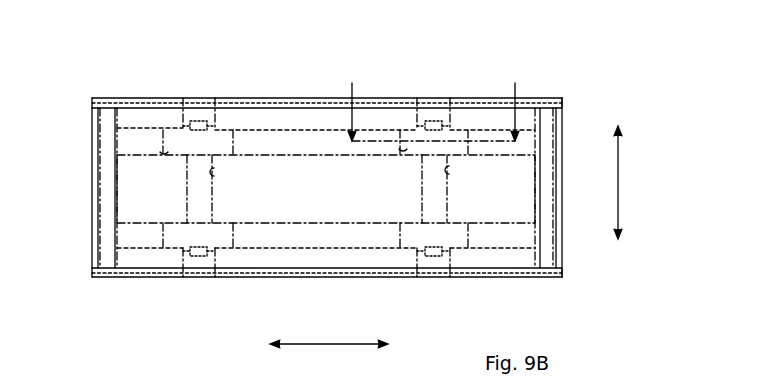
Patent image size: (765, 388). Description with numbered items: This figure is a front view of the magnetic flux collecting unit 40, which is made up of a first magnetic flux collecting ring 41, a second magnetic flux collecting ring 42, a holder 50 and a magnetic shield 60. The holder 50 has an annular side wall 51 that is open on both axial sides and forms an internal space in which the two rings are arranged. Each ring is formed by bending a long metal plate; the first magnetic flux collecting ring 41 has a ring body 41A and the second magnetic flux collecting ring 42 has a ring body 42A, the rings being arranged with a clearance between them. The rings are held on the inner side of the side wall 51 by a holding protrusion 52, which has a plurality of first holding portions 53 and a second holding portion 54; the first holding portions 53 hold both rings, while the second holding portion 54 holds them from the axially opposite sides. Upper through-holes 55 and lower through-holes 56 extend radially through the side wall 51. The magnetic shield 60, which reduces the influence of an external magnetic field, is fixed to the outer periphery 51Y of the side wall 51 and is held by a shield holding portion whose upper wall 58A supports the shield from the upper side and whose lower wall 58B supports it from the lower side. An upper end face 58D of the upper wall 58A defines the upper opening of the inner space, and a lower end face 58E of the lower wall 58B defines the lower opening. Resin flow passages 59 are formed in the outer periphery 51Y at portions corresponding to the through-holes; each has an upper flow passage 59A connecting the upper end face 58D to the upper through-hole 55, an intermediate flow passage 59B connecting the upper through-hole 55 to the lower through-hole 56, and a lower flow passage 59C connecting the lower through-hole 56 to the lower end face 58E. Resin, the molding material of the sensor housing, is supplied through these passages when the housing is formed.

The magnetic flux collecting unit 40 is at (336, 179).
The first magnetic flux collecting ring 41 is at (491, 123).
The ring body 41A is at (272, 114).
The second magnetic flux collecting ring 42 is at (492, 258).
The ring body 42A is at (265, 262).
The holder 50 is at (346, 190).
The side wall 51 is at (339, 188).
The outer periphery 51Y is at (104, 98).
The holding protrusion 52 is at (276, 189).
The first holding portions 53 is at (117, 128).
The second holding portion 54 is at (140, 190).
The upper through-holes 55 is at (165, 152).
The lower through-holes 56 is at (233, 226).
The upper wall 58A is at (312, 98).
The lower wall 58B is at (327, 277).
The upper end face 58D is at (538, 98).
The lower end face 58E is at (540, 277).
The resin flow passages 59 is at (184, 199).
The upper flow passage 59A is at (217, 108).
The intermediate flow passage 59B is at (219, 172).
The lower flow passage 59C is at (214, 265).
The magnetic shield 60 is at (563, 140).